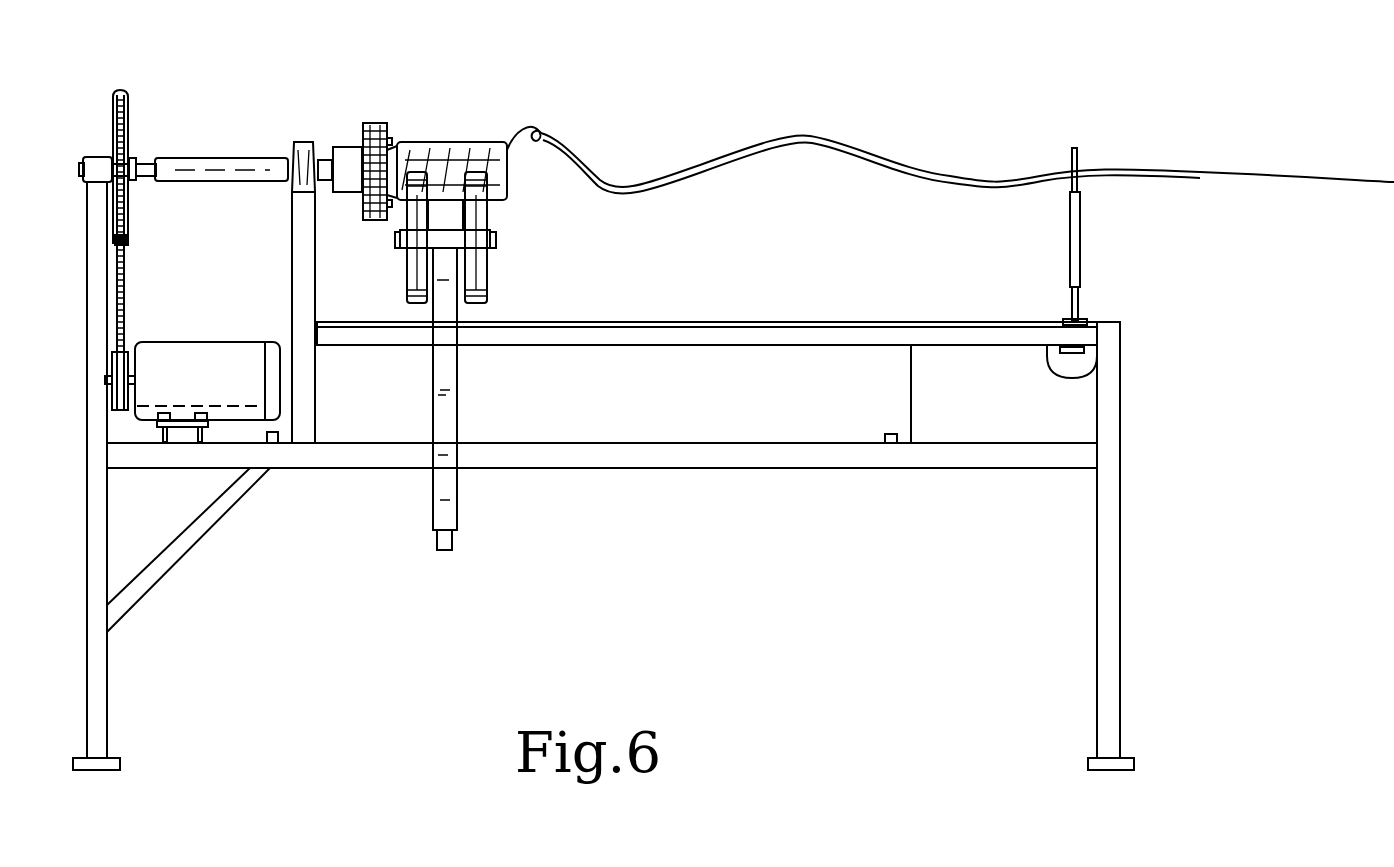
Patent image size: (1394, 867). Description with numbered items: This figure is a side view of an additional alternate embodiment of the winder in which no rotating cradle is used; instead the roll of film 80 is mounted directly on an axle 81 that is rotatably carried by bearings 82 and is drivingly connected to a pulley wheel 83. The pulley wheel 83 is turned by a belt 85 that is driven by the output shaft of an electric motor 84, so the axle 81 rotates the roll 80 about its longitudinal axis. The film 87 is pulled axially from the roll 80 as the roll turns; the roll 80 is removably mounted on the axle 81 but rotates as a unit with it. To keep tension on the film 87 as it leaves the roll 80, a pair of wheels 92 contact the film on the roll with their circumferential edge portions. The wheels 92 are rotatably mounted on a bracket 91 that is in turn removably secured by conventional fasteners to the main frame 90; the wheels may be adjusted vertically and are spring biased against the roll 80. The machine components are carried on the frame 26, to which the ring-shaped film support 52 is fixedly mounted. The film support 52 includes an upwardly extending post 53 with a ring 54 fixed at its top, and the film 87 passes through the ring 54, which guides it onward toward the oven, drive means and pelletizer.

The frame 26 is at (588, 453).
The main frame 90 is at (613, 342).
The pulley wheel 83 is at (113, 112).
The belt 85 is at (125, 277).
The electric motor 84 is at (173, 355).
The axle 81 is at (197, 163).
The bearings 82 is at (292, 193).
The roll of film 80 is at (475, 142).
The wheels 92 is at (483, 273).
The bracket 91 is at (452, 392).
The film 87 is at (673, 172).
The ring 54 is at (1073, 148).
The film support 52 is at (1057, 271).
The post 53 is at (1078, 287).